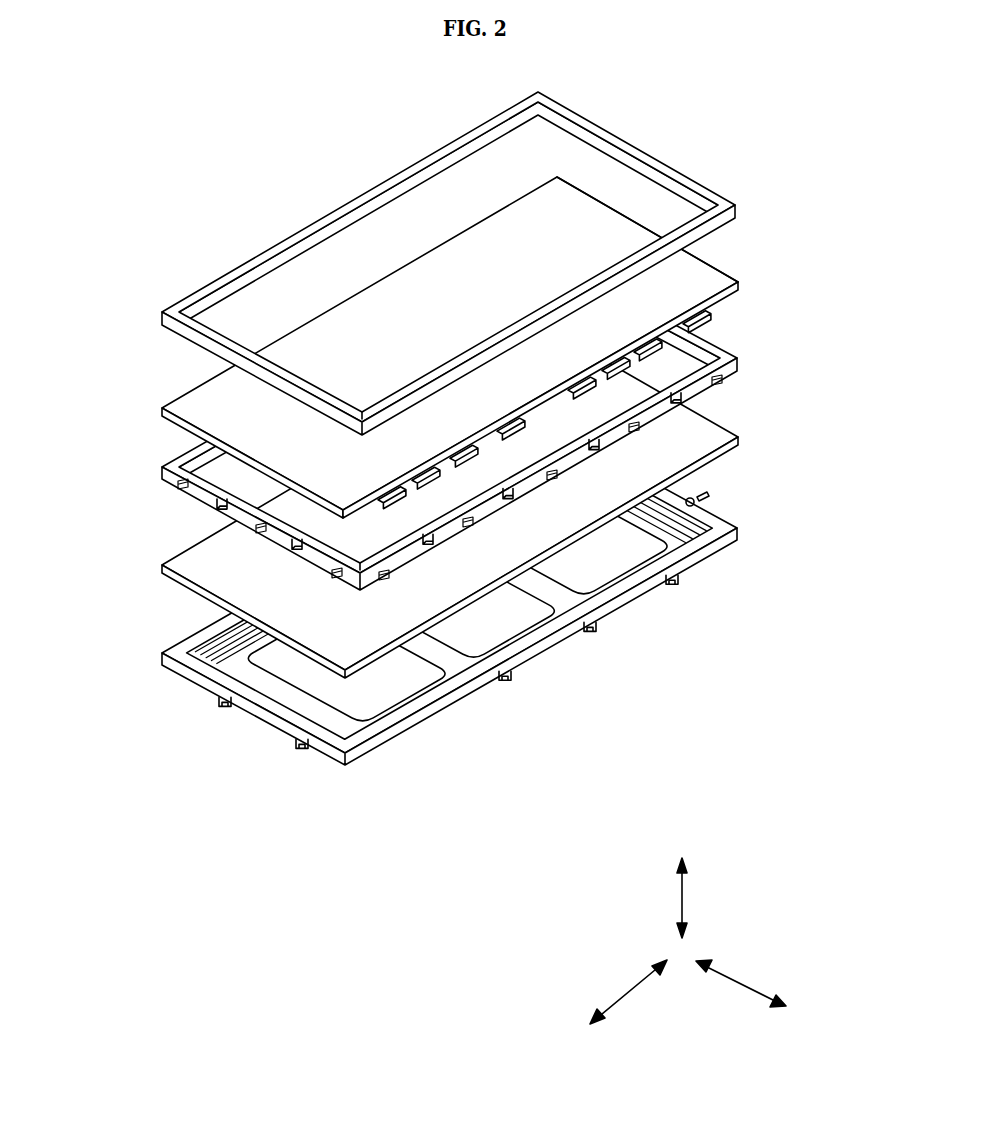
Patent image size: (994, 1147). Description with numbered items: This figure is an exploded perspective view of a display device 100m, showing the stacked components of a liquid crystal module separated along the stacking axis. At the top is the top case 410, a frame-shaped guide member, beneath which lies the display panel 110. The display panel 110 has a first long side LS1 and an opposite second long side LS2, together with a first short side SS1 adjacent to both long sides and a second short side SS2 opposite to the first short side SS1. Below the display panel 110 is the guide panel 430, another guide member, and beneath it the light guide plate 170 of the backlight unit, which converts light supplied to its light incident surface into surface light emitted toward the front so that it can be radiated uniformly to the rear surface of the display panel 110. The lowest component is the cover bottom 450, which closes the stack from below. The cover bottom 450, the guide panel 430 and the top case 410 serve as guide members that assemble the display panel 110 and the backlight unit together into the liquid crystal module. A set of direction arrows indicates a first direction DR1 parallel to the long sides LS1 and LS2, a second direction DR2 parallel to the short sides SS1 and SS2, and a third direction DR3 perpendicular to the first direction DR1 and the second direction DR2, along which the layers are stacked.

The display device 100m is at (104, 310).
The top case 410 is at (738, 208).
The display panel 110 is at (465, 343).
The first long side LS1 is at (407, 262).
The second long side LS2 is at (728, 294).
The first short side SS1 is at (170, 428).
The second short side SS2 is at (617, 215).
The guide panel 430 is at (738, 362).
The light guide plate 170 is at (738, 438).
The cover bottom 450 is at (738, 529).
The first direction DR1 is at (606, 1002).
The second direction DR2 is at (762, 992).
The third direction DR3 is at (682, 883).